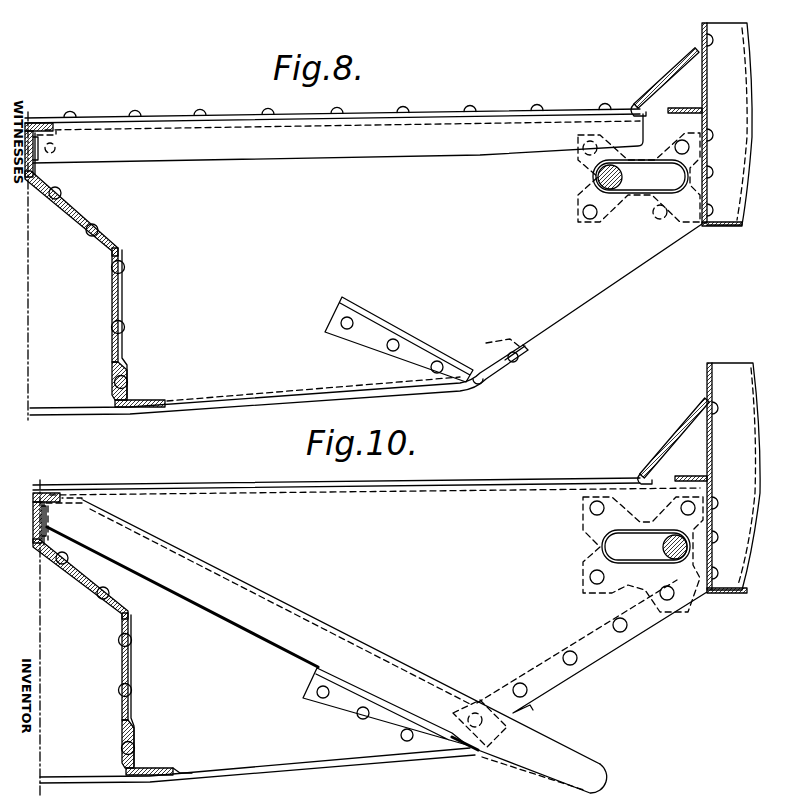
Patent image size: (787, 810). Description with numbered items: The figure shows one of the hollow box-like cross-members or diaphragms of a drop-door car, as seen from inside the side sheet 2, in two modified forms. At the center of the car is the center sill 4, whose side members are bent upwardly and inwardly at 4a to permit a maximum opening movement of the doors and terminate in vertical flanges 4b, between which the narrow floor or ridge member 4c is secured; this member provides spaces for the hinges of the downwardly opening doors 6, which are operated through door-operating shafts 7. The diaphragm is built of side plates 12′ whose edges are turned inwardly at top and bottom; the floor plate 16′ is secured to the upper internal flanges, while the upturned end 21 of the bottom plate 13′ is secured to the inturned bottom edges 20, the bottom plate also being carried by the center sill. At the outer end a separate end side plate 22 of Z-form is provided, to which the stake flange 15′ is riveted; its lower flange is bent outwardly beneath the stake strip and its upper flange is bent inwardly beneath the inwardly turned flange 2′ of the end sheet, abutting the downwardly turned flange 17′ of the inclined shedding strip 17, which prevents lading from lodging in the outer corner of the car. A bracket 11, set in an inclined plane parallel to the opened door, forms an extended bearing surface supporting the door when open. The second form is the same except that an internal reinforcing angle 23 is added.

In FIG. 8, the side sheet 2 is at (700, 60).
In FIG. 10, the side sheet 2 is at (706, 380).
In FIG. 8, the inwardly turned flange of the end sheet 2′ is at (685, 99).
In FIG. 10, the inwardly turned flange of the end sheet 2′ is at (691, 468).
In FIG. 8, the center sill 4 is at (122, 290).
In FIG. 10, the center sill 4 is at (120, 678).
In FIG. 8, the upwardly and inwardly bent portion of the center sill 4a is at (71, 213).
In FIG. 10, the upwardly and inwardly bent portion of the center sill 4a is at (80, 579).
In FIG. 8, the vertical flange of the center sill 4b is at (55, 140).
In FIG. 10, the vertical flange of the center sill 4b is at (50, 515).
In FIG. 8, the ridge member 4c is at (39, 124).
In FIG. 10, the ridge member 4c is at (43, 495).
In FIG. 8, the door 6 is at (338, 138).
In FIG. 10, the door 6 is at (327, 646).
In FIG. 8, the door-operating shaft 7 is at (622, 178).
In FIG. 10, the door-operating shaft 7 is at (663, 549).
In FIG. 8, the bracket 11 is at (372, 341).
In FIG. 10, the bracket 11 is at (342, 706).
In FIG. 8, the side plate 12′ is at (373, 238).
In FIG. 8, the bottom plate 13′ is at (343, 403).
In FIG. 8, the stake flange 15′ is at (727, 124).
In FIG. 8, the floor plate 16′ is at (373, 115).
In FIG. 10, the floor plate 16′ is at (456, 487).
In FIG. 8, the shedding strip 17 is at (667, 84).
In FIG. 10, the shedding strip 17 is at (680, 447).
In FIG. 8, the downwardly turned flange of the shedding strip 17′ is at (654, 105).
In FIG. 8, the inturned bottom edge of the side plate 20 is at (496, 355).
In FIG. 8, the upturned end of the bottom plate 21 is at (501, 363).
In FIG. 8, the end side plate 22 is at (707, 160).
In FIG. 10, the internal reinforcing angle 23 is at (608, 650).